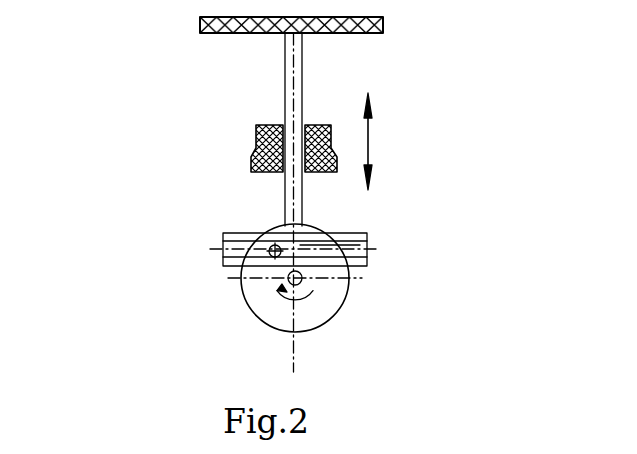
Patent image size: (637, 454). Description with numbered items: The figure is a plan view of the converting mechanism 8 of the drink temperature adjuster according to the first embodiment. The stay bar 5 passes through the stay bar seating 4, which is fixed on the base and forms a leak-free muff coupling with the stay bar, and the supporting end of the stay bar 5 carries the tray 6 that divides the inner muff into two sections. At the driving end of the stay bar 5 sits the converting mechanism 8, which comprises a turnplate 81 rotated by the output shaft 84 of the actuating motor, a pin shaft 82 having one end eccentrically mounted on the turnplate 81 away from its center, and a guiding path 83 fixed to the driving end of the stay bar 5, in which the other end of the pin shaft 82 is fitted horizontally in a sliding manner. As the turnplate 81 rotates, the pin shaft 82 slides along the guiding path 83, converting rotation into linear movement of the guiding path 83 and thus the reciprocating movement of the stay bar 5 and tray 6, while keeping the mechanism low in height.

The stay bar seating 4 is at (253, 153).
The stay bar 5 is at (285, 93).
The tray 6 is at (205, 33).
The converting mechanism 8 is at (382, 220).
The turnplate 81 is at (272, 308).
The pin shaft 82 is at (269, 253).
The guiding path 83 is at (223, 245).
The output shaft 84 is at (302, 283).